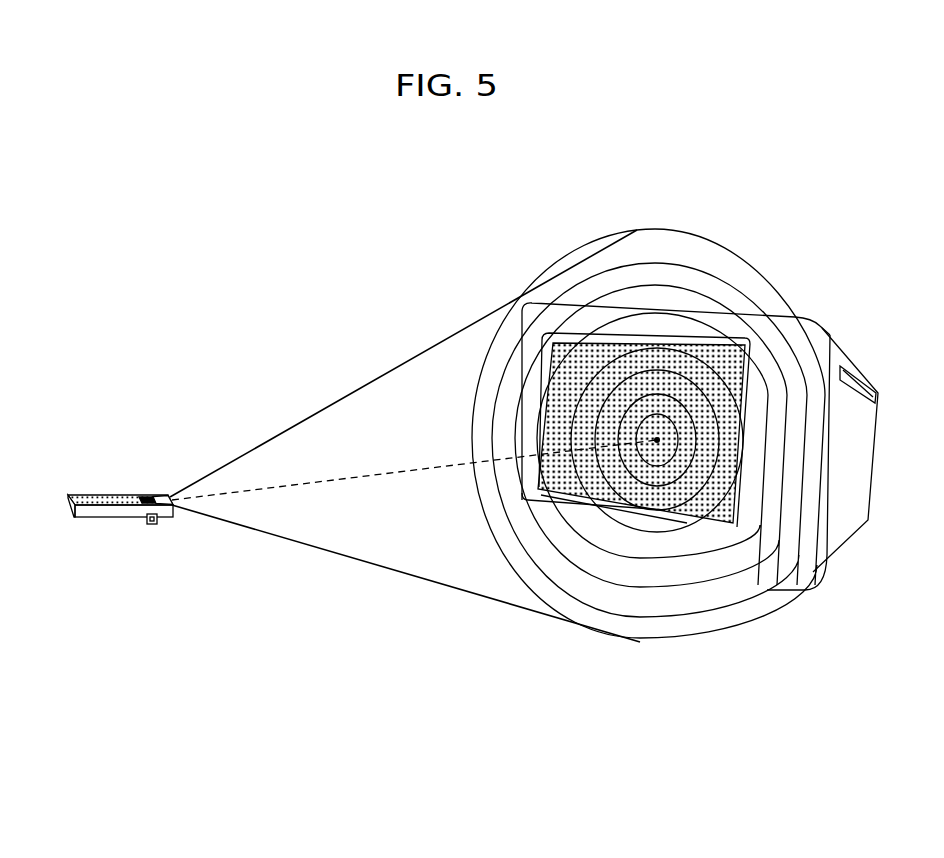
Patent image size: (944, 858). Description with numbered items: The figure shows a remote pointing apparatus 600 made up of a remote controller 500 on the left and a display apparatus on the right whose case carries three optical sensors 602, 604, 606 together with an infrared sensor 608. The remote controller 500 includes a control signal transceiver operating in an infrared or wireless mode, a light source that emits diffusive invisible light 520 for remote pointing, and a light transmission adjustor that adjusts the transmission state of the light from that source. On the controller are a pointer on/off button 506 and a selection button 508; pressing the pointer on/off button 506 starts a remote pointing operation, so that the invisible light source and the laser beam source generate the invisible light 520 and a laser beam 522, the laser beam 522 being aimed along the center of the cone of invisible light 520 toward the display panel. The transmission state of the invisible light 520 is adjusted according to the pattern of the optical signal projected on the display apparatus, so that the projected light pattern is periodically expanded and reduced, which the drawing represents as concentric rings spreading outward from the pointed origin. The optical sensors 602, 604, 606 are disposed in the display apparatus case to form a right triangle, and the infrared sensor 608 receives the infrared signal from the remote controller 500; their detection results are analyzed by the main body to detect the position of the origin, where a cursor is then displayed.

The remote controller 500 is at (106, 515).
The pointer on/off button 506 is at (145, 486).
The selection button 508 is at (153, 534).
The invisible light 520 is at (412, 588).
The laser beam 522 is at (373, 476).
The remote pointing apparatus 600 is at (255, 207).
The optical sensor 602 is at (768, 326).
The optical sensor 604 is at (739, 562).
The optical sensor 606 is at (505, 513).
The infrared sensor 608 is at (616, 538).